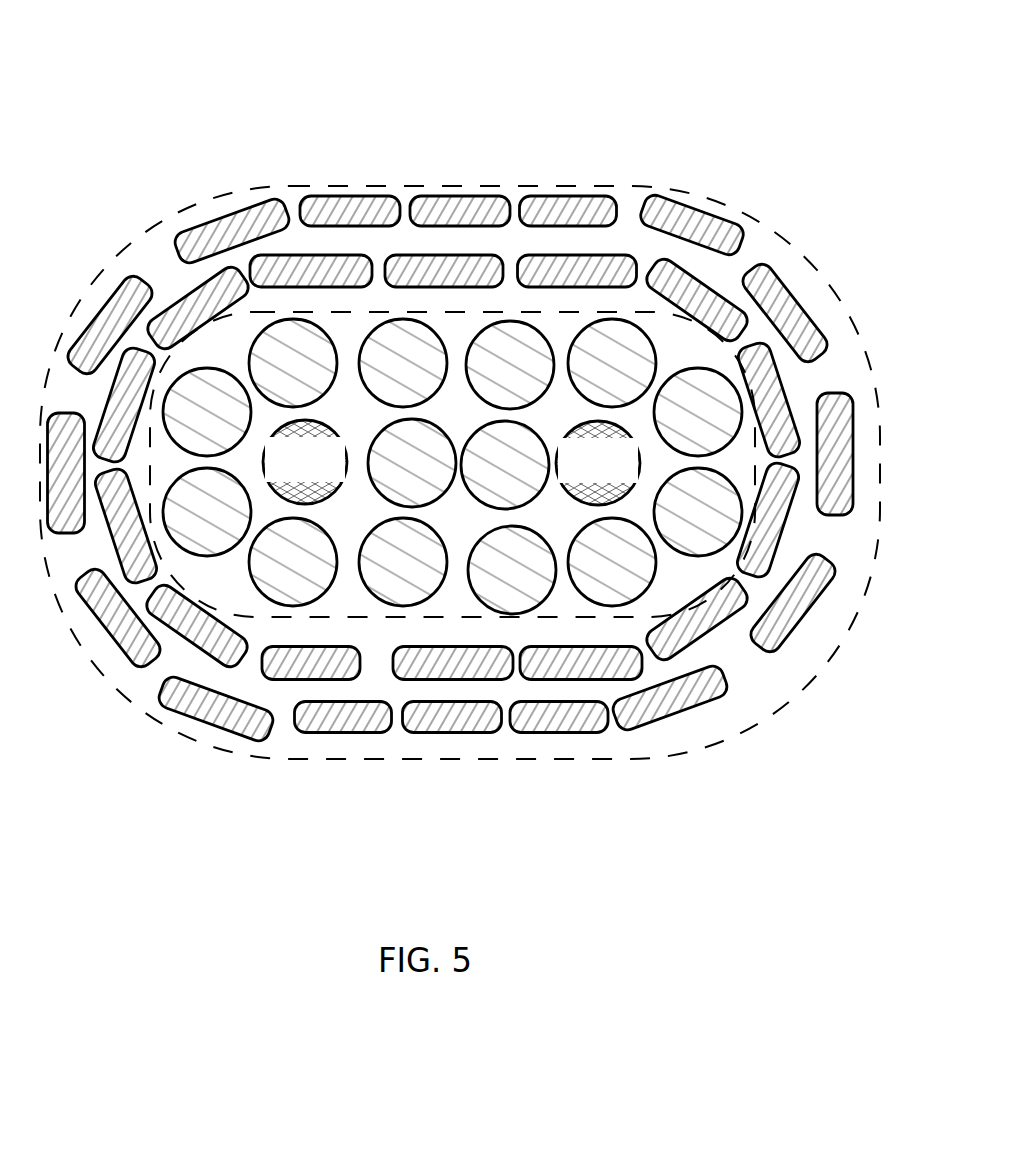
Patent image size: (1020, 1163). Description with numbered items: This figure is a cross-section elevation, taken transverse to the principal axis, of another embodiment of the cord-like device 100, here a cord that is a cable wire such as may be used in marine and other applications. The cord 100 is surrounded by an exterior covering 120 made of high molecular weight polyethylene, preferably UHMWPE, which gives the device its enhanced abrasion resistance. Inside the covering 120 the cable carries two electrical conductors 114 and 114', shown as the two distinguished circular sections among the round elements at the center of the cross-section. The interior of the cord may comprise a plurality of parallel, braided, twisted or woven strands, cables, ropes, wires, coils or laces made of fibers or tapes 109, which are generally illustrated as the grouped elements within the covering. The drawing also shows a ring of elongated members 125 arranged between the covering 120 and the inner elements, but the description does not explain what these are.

The cord-like device 100 is at (290, 128).
The exterior covering 120 is at (515, 192).
The strength members 125 is at (210, 227).
The fibers or tapes 109 is at (675, 367).
The electrical conductor 114 is at (598, 463).
The electrical conductor 114' is at (305, 462).